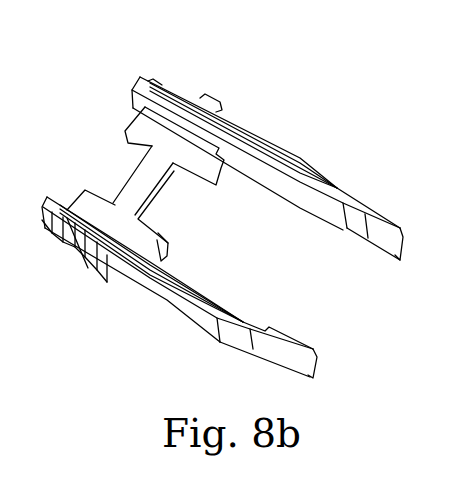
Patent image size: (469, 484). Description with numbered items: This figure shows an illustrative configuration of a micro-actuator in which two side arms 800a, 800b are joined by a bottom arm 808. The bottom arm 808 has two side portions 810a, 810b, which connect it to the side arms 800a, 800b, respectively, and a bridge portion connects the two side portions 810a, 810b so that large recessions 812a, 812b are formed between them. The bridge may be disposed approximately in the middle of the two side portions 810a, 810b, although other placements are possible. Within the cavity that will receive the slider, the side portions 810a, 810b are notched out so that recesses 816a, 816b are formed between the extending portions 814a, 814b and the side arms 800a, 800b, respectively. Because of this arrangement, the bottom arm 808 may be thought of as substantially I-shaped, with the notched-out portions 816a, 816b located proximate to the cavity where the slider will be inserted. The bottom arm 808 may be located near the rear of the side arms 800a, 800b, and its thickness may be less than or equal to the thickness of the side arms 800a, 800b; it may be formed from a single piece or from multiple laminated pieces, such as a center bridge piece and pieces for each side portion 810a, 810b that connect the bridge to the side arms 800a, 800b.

The side arm 800a is at (227, 308).
The side arm 800b is at (297, 197).
The bottom arm 808 is at (133, 167).
The side portion 810a is at (92, 275).
The side portion 810b is at (175, 135).
The recession 812a is at (130, 165).
The recession 812b is at (172, 212).
The extending portion 814a is at (150, 252).
The extending portion 814b is at (221, 181).
The recess 816a is at (130, 262).
The recess 816b is at (220, 179).